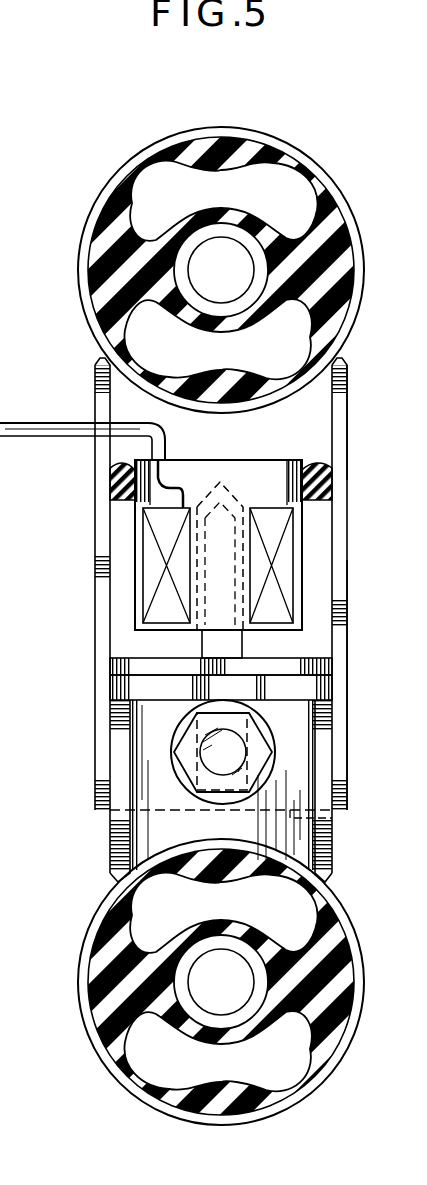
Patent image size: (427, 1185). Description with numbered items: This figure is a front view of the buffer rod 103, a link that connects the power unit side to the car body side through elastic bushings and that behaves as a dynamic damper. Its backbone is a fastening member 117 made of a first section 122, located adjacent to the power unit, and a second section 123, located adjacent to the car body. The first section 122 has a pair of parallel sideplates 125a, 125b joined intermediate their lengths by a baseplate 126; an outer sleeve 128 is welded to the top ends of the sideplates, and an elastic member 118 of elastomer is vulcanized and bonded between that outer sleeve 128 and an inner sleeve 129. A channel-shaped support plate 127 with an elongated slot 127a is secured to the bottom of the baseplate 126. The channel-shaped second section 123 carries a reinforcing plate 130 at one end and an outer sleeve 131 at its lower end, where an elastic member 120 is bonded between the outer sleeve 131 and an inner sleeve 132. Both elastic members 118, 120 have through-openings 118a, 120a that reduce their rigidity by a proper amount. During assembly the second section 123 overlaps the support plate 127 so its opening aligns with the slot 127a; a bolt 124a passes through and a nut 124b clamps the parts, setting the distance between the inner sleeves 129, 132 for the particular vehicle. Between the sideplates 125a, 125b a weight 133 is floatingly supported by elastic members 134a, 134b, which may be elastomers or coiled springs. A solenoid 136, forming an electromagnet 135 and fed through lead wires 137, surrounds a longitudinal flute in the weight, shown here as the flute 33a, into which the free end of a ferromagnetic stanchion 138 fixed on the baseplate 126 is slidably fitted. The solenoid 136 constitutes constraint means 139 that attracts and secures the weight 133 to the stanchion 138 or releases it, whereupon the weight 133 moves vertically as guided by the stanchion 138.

The buffer rod 103 is at (221, 244).
The outer sleeve 128 is at (232, 263).
The elastic member 118 is at (245, 270).
The through-opening 118a is at (225, 270).
The inner sleeve 129 is at (292, 270).
The lead wires 137 is at (40, 422).
The first section 122 is at (349, 412).
The weight 133 is at (283, 468).
The plunger 33a is at (216, 480).
The elastic member 134a is at (108, 468).
The elastic member 134b is at (328, 468).
The solenoid 136 is at (165, 520).
The electromagnet 135 is at (152, 593).
The constraint means 139 is at (308, 538).
The sideplate 125a is at (107, 575).
The sideplate 125b is at (340, 587).
The stanchion 138 is at (218, 642).
The baseplate 126 is at (300, 664).
The fastening member 117 is at (349, 683).
The reinforcing plate 130 is at (118, 684).
The elongated slot 127a is at (245, 729).
The bolt 124a is at (205, 757).
The nut 124b is at (250, 760).
The support plate 127 is at (332, 815).
The second section 123 is at (337, 860).
The through-opening 120a is at (217, 978).
The inner sleeve 132 is at (292, 981).
The elastic member 120 is at (249, 982).
The outer sleeve 131 is at (221, 982).